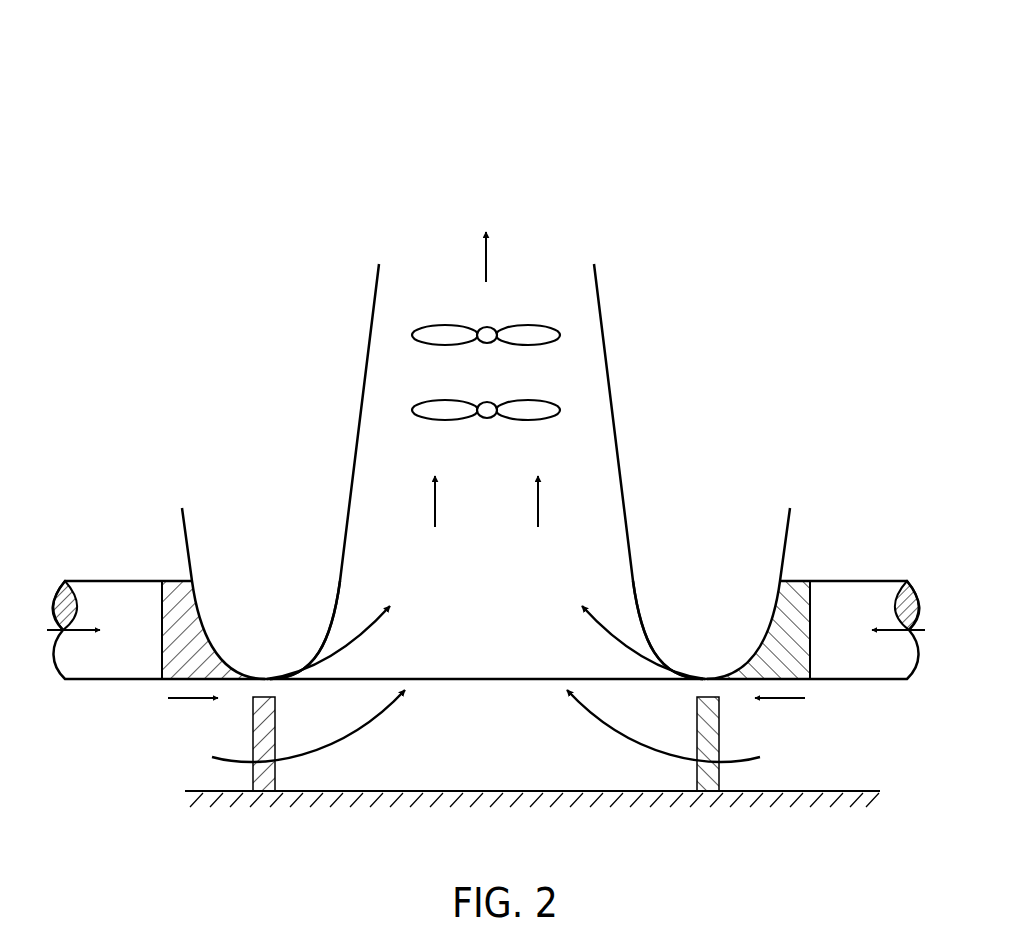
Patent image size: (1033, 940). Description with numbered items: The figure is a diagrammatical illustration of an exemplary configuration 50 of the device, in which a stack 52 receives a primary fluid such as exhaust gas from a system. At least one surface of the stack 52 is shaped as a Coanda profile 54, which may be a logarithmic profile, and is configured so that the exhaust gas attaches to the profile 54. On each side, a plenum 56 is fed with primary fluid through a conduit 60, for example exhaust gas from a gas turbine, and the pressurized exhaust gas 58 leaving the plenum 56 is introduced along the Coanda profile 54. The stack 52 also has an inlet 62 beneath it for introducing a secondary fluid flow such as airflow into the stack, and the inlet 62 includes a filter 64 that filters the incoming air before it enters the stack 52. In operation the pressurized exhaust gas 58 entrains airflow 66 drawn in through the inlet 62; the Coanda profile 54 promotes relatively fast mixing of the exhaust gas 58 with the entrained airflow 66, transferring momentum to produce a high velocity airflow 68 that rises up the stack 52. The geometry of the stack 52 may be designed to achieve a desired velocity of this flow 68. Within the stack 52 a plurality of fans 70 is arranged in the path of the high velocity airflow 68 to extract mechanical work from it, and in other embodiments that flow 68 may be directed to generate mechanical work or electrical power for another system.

The exemplary configuration 50 is at (716, 74).
The stack 52 is at (608, 358).
The Coanda profile 54 is at (314, 659).
The plenum 56 is at (172, 580).
The pressurized exhaust gas 58 is at (364, 641).
The conduit 60 is at (856, 580).
The inlet 62 is at (180, 698).
The filter 64 is at (719, 722).
The entrained airflow 66 is at (387, 710).
The high velocity airflow 68 is at (437, 500).
The fans 70 is at (522, 398).